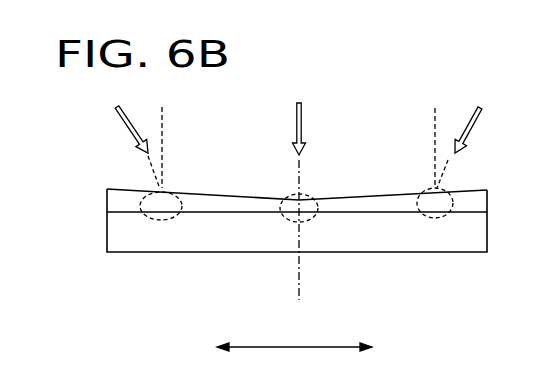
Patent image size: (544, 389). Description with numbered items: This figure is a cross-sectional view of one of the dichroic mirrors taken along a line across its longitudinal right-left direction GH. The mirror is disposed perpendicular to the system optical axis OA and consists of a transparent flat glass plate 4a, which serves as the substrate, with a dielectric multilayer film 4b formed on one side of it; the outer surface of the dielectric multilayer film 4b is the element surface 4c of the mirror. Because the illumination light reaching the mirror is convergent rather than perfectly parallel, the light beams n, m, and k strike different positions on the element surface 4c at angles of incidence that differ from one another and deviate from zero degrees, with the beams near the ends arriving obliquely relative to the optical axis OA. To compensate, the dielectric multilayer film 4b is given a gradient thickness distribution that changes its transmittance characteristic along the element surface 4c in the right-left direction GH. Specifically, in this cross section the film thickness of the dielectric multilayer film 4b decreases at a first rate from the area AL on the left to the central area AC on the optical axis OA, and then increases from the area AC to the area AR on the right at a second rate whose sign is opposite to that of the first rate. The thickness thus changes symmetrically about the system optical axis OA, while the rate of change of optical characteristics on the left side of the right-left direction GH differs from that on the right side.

The transparent flat glass plate 4a is at (106, 233).
The dielectric multilayer film 4b is at (106, 205).
The element surface 4c is at (116, 190).
The light beam n is at (120, 117).
The light beam m is at (296, 120).
The light beam k is at (476, 118).
The area AL is at (152, 218).
The area AC is at (287, 222).
The area AR is at (446, 216).
The system optical axis OA is at (301, 270).
The left direction G is at (289, 365).
The right direction H is at (370, 365).